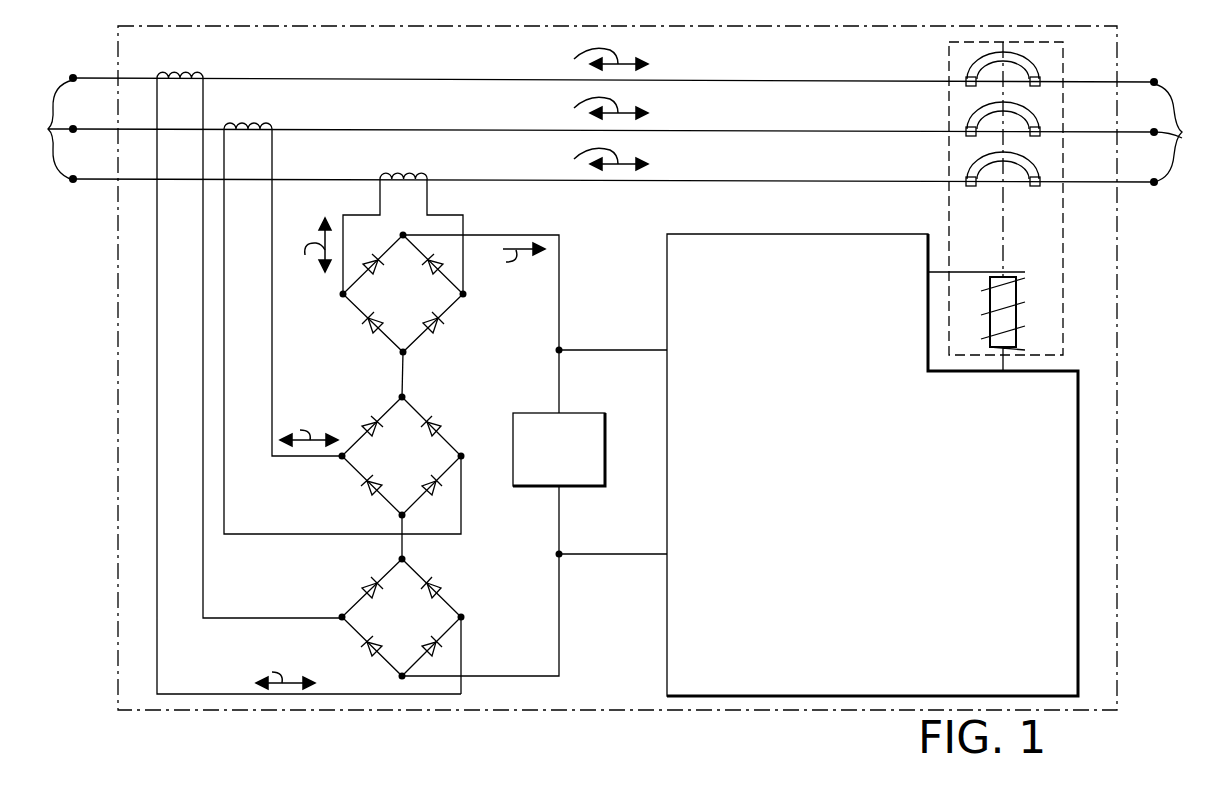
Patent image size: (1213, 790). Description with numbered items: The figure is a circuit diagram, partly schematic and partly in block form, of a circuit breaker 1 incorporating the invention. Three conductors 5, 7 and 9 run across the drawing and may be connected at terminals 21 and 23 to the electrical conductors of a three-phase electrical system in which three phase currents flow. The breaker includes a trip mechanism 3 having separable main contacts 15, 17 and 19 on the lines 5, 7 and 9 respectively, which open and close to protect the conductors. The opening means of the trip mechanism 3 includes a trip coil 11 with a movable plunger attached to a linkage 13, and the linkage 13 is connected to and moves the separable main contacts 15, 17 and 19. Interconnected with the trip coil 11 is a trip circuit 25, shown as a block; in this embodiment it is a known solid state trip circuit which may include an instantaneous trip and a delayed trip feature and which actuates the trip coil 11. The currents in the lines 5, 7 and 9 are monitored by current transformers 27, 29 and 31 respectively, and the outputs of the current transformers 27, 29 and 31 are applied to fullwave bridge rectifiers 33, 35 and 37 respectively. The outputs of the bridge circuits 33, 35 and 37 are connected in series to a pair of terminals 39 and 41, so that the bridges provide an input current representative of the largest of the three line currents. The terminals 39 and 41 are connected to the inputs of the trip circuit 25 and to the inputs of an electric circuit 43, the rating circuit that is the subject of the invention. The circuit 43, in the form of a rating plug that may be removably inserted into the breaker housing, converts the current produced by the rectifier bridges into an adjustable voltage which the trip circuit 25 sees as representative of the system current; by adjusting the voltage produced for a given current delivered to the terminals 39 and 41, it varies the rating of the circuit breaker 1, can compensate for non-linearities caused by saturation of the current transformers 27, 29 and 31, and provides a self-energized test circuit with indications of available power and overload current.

The circuit breaker 1 is at (117, 455).
The trip mechanism 3 is at (1063, 287).
The conductor 5 is at (760, 180).
The conductor 7 is at (760, 129).
The conductor 9 is at (760, 80).
The trip coil 11 is at (1016, 340).
The linkage 13 is at (972, 88).
The separable main contacts 15 is at (993, 212).
The separable main contacts 17 is at (972, 139).
The separable main contacts 19 is at (1036, 88).
The terminals 21 is at (51, 128).
The terminals 23 is at (1177, 132).
The trip circuit 25 is at (665, 641).
The current transformer 27 is at (403, 173).
The current transformer 29 is at (248, 122).
The current transformer 31 is at (178, 71).
The fullwave bridge rectifier 33 is at (378, 307).
The fullwave bridge rectifier 35 is at (371, 477).
The fullwave bridge rectifier 37 is at (356, 625).
The terminal 39 is at (558, 556).
The terminal 41 is at (559, 351).
The electric circuit 43 is at (513, 430).